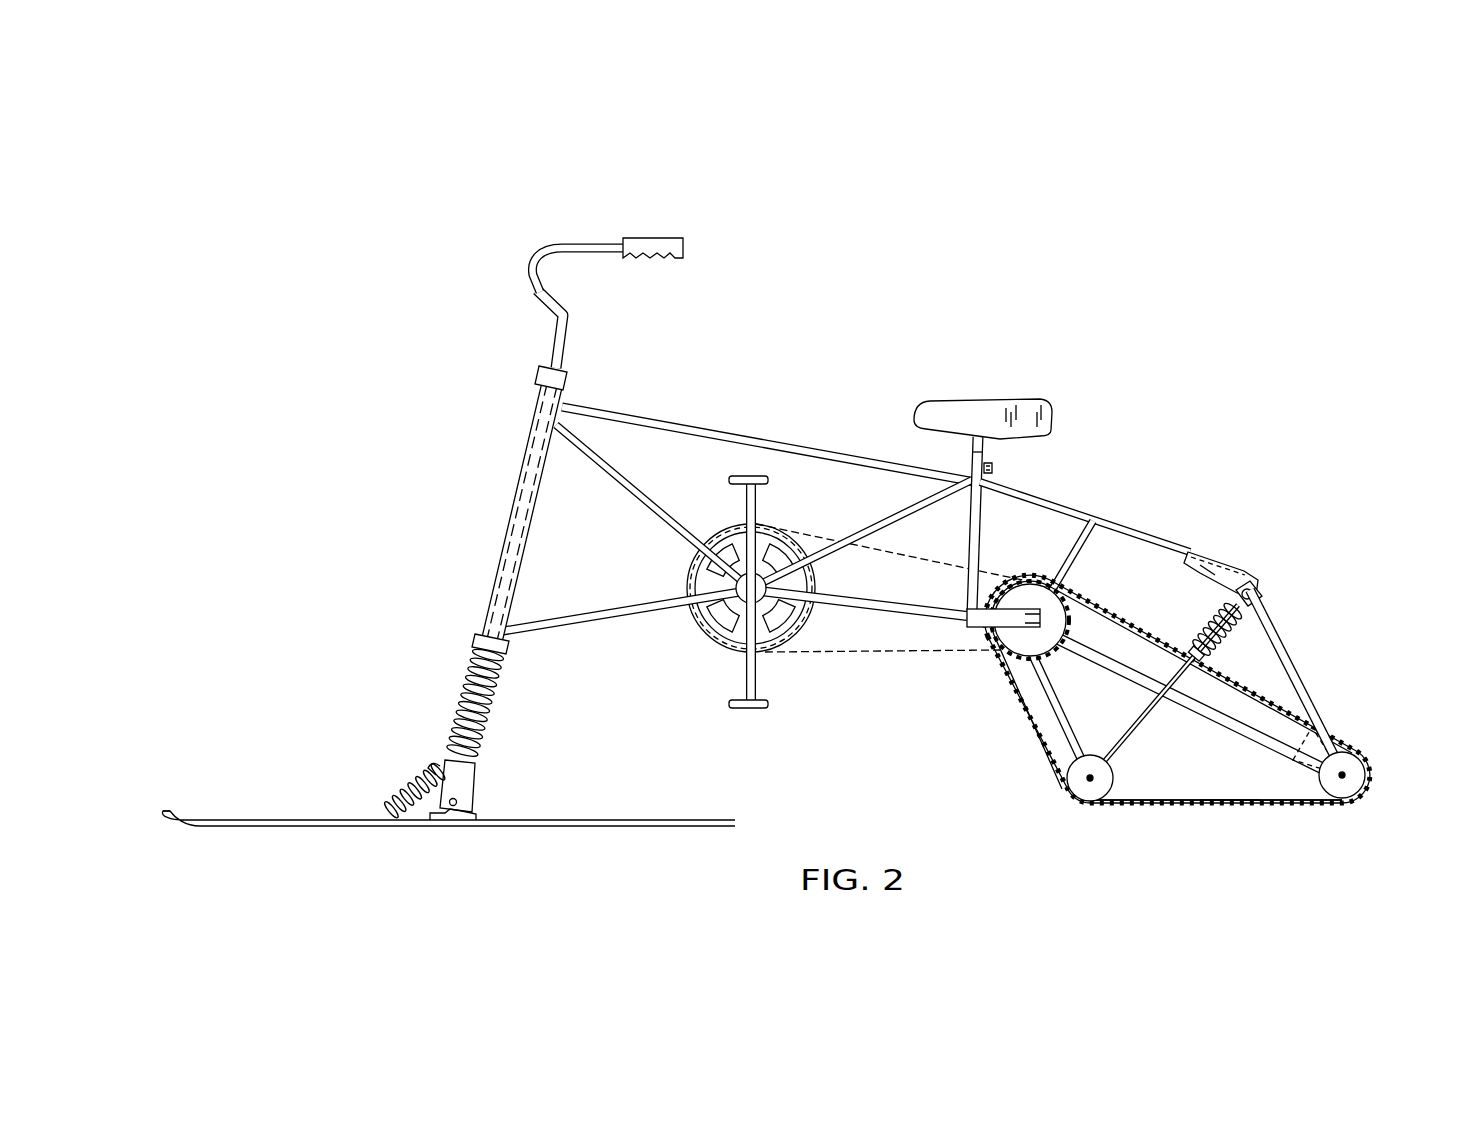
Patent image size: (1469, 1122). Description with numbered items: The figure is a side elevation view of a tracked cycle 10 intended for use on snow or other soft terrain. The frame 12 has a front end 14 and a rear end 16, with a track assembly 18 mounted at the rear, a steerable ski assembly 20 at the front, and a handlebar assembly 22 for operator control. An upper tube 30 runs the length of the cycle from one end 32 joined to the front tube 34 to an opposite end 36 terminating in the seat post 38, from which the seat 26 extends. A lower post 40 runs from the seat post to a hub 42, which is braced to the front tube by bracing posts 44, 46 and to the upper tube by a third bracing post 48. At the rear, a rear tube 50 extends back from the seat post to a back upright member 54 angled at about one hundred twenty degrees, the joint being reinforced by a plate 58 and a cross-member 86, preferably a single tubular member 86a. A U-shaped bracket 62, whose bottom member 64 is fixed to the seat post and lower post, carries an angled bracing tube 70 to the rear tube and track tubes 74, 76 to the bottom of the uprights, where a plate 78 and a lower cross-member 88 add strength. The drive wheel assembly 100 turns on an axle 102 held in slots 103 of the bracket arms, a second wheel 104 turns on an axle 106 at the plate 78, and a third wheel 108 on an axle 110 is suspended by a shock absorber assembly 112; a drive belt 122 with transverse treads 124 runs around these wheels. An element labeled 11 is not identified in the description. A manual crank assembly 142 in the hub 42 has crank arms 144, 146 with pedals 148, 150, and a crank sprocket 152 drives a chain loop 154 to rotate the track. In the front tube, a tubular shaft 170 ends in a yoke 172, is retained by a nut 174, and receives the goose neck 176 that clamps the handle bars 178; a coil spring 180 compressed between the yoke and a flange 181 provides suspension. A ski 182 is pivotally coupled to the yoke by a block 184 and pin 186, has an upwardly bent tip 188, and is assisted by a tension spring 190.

The tracked cycle 10 is at (1025, 289).
The front idler support arm 11 is at (1026, 705).
The frame 12 is at (766, 410).
The front end 14 is at (518, 416).
The rear end 16 is at (1173, 664).
The track assembly 18 is at (1264, 685).
The ski assembly 20 is at (448, 769).
The handlebar assembly 22 is at (536, 280).
The seat 26 is at (943, 390).
The upper tube 30 is at (697, 430).
The end of upper tube 32 is at (580, 402).
The front tube 34 is at (488, 574).
The opposite end of upper tube 36 is at (884, 393).
The seat post 38 is at (938, 523).
The lower post 40 is at (870, 605).
The hub 42 is at (764, 622).
The bracing post 44 is at (546, 622).
The bracing post 46 is at (580, 498).
The third bracing post 48 is at (882, 450).
The rear tube 50 is at (1040, 496).
The back upright member 54 is at (1280, 624).
The bracket plate 58 is at (1208, 566).
The U-shaped bracket 62 is at (967, 642).
The bottom member 64 is at (933, 588).
The angled bracing tube 70 is at (1092, 520).
The track tube 74 is at (1210, 773).
The track tube 76 is at (1257, 758).
The reinforcing plate 78 is at (1330, 748).
The cross-member 86 is at (1196, 546).
The tubular member 86a is at (1265, 584).
The lower cross-member 88 is at (1316, 690).
The drive wheel assembly 100 is at (1064, 665).
The axle 102 is at (1000, 630).
The slots 103 is at (1050, 617).
The second wheel 104 is at (1351, 788).
The axle 106 is at (1295, 860).
The third wheel 108 is at (1093, 793).
The axle 110 is at (1032, 848).
The shock absorber assembly 112 is at (1222, 606).
The drive belt 122 is at (1160, 812).
The transverse treads 124 is at (1234, 808).
The crank assembly 142 is at (720, 602).
The crank arm 144 is at (688, 710).
The crank arm 146 is at (758, 500).
The pedal 148 is at (760, 707).
The pedal 150 is at (700, 467).
The crank sprocket 152 is at (657, 576).
The chain loop 154 is at (814, 528).
The tubular shaft 170 is at (455, 494).
The yoke 172 is at (468, 782).
The nut 174 is at (548, 372).
The goose neck 176 is at (577, 313).
The handle bars 178 is at (552, 222).
The coil spring 180 is at (470, 688).
The flange 181 is at (478, 634).
The ski 182 is at (288, 820).
The block 184 is at (451, 822).
The pin 186 is at (462, 805).
The upwardly bent tip 188 is at (176, 812).
The tension spring 190 is at (408, 820).